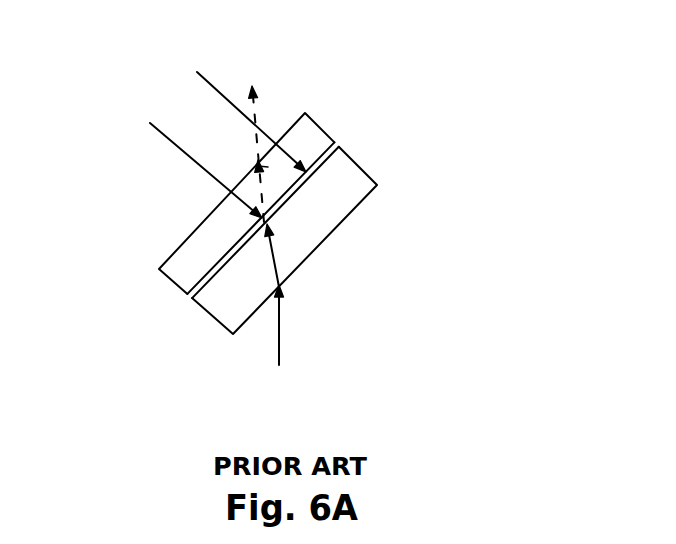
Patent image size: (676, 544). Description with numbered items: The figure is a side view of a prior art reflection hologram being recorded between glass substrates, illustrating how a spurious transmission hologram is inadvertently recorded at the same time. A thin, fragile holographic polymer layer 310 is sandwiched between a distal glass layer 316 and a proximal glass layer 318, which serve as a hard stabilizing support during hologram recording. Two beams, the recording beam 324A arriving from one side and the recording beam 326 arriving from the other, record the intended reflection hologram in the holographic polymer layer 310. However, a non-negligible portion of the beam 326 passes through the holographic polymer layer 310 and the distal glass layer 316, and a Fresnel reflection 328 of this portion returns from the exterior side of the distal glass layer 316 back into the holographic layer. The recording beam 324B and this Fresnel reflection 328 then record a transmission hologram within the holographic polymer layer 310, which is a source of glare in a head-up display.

The holographic polymer layer 310 is at (190, 303).
The distal glass layer 316 is at (183, 258).
The proximal glass layer 318 is at (231, 318).
The recording beam 324A is at (155, 132).
The recording beam 324B is at (214, 86).
The recording beam 326 is at (280, 336).
The Fresnel reflection 328 is at (280, 172).